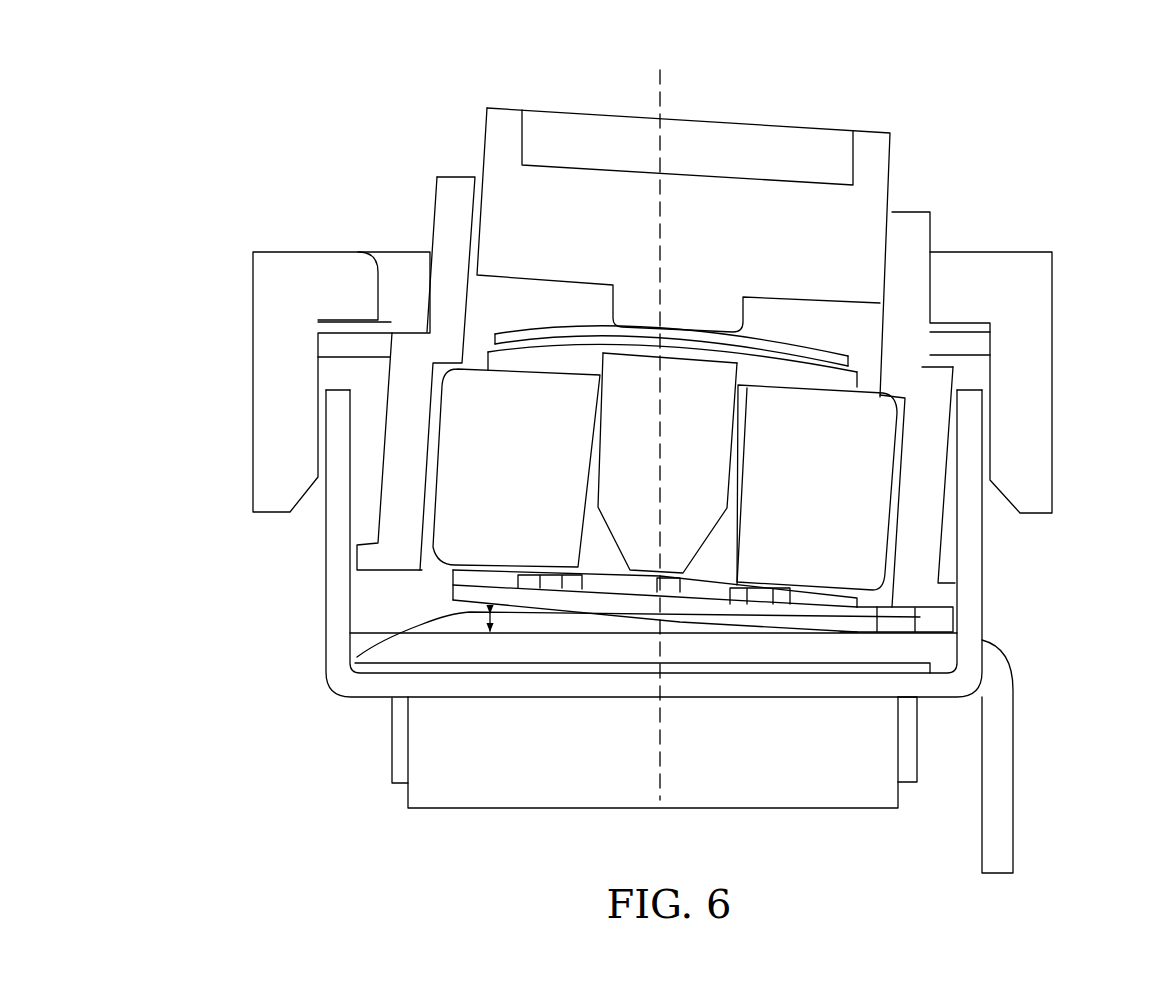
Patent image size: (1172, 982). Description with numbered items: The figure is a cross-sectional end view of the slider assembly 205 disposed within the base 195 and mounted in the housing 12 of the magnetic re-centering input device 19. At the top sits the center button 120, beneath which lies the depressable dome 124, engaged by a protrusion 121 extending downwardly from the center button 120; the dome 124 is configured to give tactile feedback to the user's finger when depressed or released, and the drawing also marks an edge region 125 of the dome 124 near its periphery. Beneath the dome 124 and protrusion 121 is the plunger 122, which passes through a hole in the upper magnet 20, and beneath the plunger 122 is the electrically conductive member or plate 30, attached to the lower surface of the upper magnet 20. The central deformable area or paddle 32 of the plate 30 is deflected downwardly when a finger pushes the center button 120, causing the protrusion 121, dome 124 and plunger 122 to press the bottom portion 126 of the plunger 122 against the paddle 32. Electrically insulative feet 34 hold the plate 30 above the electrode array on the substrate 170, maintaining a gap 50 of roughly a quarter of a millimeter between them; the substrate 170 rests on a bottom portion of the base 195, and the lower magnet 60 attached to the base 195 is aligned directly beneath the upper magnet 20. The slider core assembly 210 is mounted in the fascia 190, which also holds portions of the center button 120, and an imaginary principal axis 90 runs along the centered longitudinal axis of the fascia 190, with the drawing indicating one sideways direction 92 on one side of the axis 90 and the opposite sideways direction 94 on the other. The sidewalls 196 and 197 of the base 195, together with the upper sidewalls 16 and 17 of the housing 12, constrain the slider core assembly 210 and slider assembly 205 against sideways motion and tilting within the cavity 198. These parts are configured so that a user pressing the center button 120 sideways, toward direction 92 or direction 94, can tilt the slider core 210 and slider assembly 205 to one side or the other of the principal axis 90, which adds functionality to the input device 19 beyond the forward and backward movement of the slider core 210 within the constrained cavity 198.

The housing 12 is at (275, 344).
The upper sidewall of housing 16 is at (930, 300).
The upper sidewall of housing 17 is at (378, 282).
The magnetic re-centering input device 19 is at (176, 152).
The upper magnet 20 is at (467, 463).
The electrically conductive member 30 is at (485, 578).
The deformable area 32 is at (600, 605).
The insulative feet 34 is at (842, 623).
The gap 50 is at (345, 658).
The lower magnet 60 is at (480, 798).
The principal axis 90 is at (664, 79).
The first direction 92 is at (793, 106).
The second direction 94 is at (540, 94).
The center button 120 is at (868, 150).
The protrusion 121 is at (720, 325).
The plunger 122 is at (640, 366).
The depressable dome 124 is at (520, 345).
The lens edge 125 is at (826, 353).
The bottom portion of plunger 126 is at (670, 580).
The substrate 170 is at (1003, 790).
The fascia 190 is at (400, 513).
The base 195 is at (360, 707).
The sidewall of base 196 is at (968, 527).
The sidewall of base 197 is at (337, 502).
The cavity 198 is at (353, 375).
The slider assembly 205 is at (730, 71).
The slider core assembly 210 is at (570, 366).